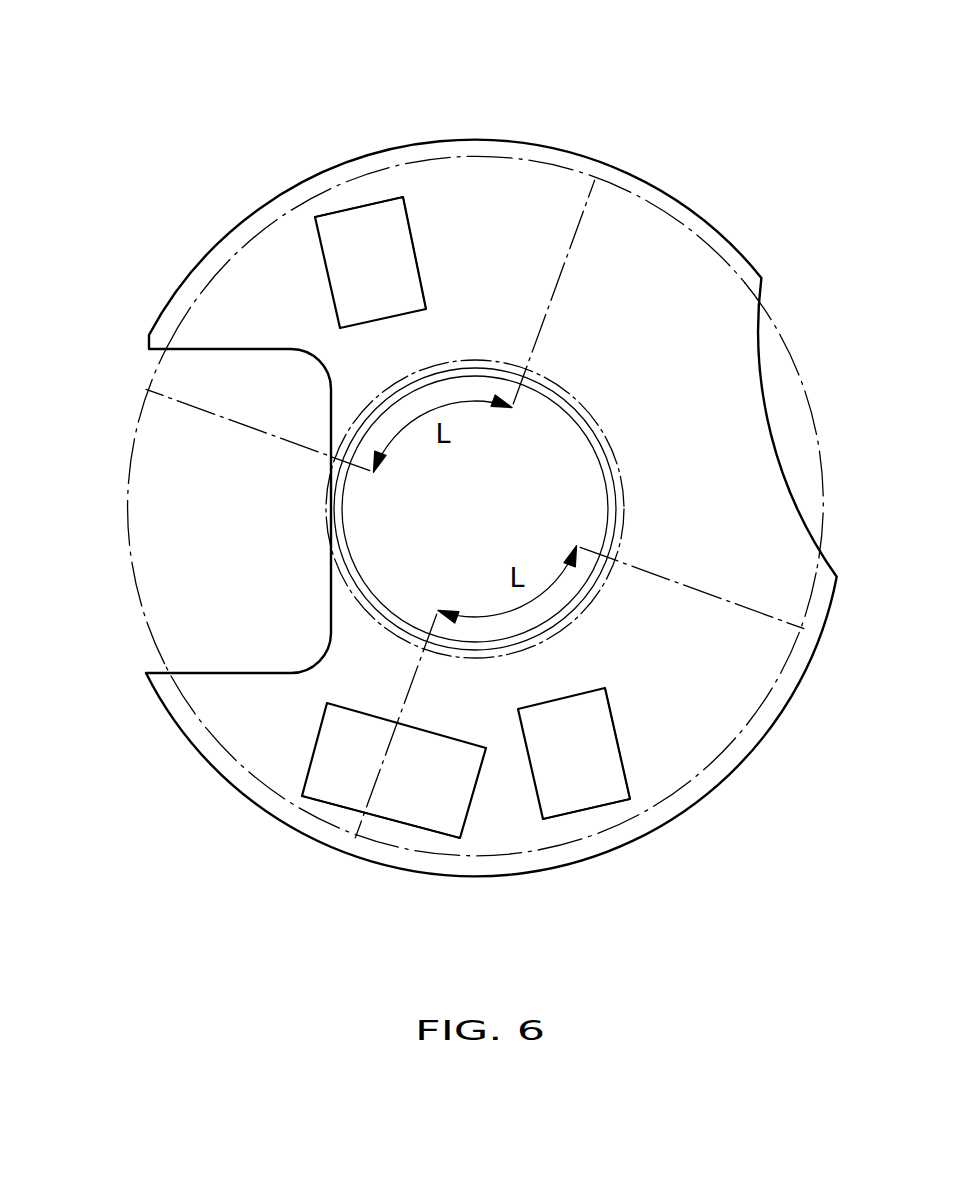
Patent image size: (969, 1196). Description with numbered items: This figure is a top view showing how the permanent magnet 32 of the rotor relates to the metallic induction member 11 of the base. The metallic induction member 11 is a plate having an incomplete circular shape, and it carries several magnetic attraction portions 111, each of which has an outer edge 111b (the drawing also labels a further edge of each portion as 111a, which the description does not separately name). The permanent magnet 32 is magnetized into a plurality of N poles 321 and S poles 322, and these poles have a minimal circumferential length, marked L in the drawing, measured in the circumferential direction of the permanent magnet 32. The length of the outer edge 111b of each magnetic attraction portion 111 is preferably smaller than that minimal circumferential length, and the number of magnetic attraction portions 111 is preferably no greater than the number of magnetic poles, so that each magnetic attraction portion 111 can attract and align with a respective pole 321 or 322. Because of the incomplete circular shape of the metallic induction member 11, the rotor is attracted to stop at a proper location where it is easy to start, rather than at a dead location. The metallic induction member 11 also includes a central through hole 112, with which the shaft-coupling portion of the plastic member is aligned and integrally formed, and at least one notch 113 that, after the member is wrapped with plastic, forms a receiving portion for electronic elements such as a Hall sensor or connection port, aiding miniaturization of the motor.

The metallic induction member 11 is at (580, 152).
The magnetic attraction portion 111 is at (327, 267).
The first side wall of magnet slot 111a is at (413, 283).
The outer edge 111b is at (350, 207).
The through hole 112 is at (592, 470).
The notch 113 is at (230, 660).
The permanent magnet 32 is at (433, 433).
The N pole 321 is at (450, 167).
The S pole 322 is at (720, 280).